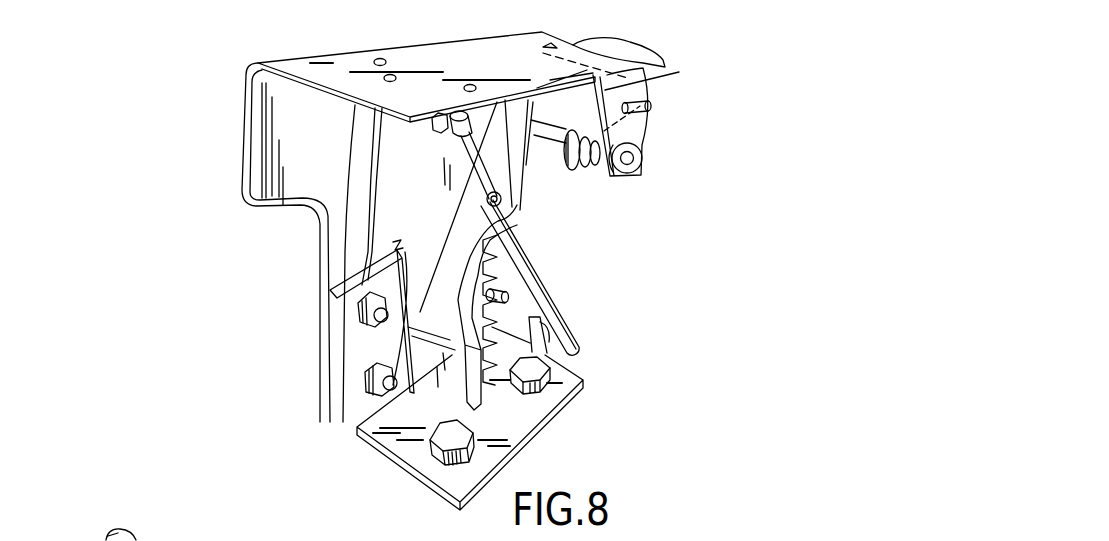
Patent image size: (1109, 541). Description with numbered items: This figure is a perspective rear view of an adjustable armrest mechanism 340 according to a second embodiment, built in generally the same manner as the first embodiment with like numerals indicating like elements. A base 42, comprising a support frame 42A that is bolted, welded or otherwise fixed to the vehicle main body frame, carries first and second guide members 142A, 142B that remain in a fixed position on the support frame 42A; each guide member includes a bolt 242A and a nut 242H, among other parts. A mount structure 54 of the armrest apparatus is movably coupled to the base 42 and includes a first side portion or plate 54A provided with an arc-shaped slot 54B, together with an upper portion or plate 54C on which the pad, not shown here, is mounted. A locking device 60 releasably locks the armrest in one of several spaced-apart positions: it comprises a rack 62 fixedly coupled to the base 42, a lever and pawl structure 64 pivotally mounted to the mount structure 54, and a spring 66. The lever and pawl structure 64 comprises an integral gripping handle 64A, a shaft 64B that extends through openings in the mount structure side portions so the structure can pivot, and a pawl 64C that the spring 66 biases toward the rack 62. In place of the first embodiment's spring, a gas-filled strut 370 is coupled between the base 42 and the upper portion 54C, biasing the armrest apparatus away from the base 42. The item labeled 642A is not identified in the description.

The mount structure 54 is at (405, 58).
The first side portion 54A is at (270, 133).
The arc-shaped slot 54B is at (372, 218).
The upper portion 54C is at (483, 50).
The lever and pawl structure 64 is at (535, 156).
The gripping handle 64A is at (634, 48).
The shaft 64B is at (446, 240).
The pawl 64C is at (523, 187).
The adjustable armrest mechanism 340 is at (695, 55).
The locking device 60 is at (656, 168).
The spring 66 is at (590, 178).
The gas-filled strut 370 is at (546, 284).
The rack 62 is at (480, 345).
The bolt 242A is at (395, 305).
The nut 242H is at (404, 236).
The first guide member 142A is at (350, 309).
The second guide member 142B is at (356, 375).
The base 42 is at (410, 450).
The support frame 42A is at (447, 467).
The lever 642A is at (152, 540).